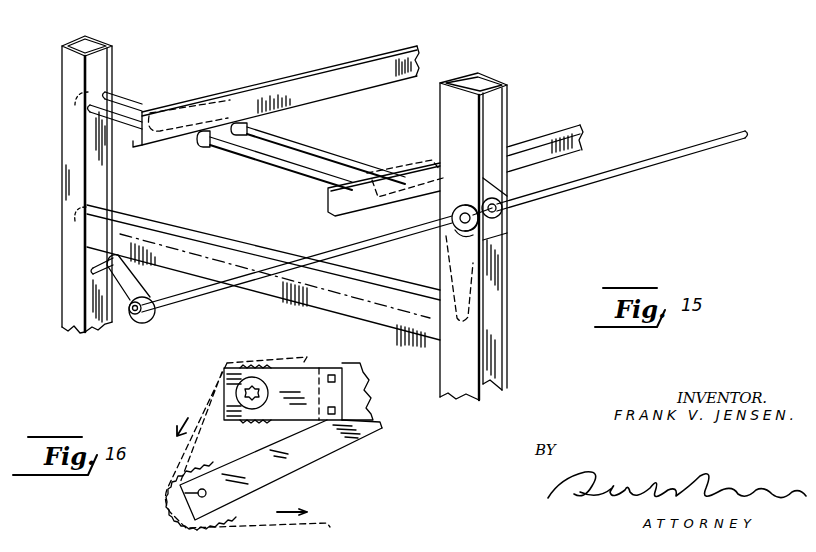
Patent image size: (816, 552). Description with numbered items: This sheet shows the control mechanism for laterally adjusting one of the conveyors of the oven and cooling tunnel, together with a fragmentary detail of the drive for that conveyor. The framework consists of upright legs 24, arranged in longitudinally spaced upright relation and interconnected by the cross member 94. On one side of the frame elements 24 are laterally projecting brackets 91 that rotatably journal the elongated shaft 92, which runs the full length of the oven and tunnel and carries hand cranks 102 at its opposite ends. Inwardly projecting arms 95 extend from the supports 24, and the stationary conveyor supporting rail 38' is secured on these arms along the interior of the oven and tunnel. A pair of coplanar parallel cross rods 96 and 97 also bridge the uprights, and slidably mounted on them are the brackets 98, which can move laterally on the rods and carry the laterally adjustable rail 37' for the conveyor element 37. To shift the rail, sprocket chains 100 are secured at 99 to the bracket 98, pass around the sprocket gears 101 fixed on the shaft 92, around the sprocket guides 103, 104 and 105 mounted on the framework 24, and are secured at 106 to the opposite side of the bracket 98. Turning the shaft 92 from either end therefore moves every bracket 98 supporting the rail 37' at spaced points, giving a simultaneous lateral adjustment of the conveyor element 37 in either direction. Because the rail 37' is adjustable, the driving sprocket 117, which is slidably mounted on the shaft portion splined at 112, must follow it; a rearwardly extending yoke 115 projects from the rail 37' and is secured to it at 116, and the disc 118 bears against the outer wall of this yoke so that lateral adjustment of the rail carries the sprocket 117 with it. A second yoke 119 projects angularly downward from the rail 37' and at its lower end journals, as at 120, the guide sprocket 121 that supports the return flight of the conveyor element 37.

In FIG. 15, the upright legs 24 is at (70, 280).
In FIG. 15, the laterally adjustable rail 37' is at (263, 218).
In FIG. 16, the laterally adjustable rail 37' is at (379, 385).
In FIG. 15, the stationary conveyor supporting rail 38' is at (545, 124).
In FIG. 15, the laterally projecting brackets 91 is at (509, 223).
In FIG. 15, the elongated shaft 92 is at (630, 167).
In FIG. 15, the cross member 94 is at (284, 304).
In FIG. 15, the inwardly projecting arms 95 is at (413, 208).
In FIG. 15, the cross rod 96 is at (267, 162).
In FIG. 15, the cross rod 97 is at (342, 122).
In FIG. 15, the brackets 98 is at (192, 140).
In FIG. 15, the chain securement point 99 is at (230, 122).
In FIG. 15, the sprocket chains 100 is at (353, 167).
In FIG. 15, the sprocket gears 101 is at (457, 233).
In FIG. 15, the hand cranks 102 is at (110, 270).
In FIG. 15, the sprocket guide 103 is at (443, 277).
In FIG. 15, the sprocket guide 104 is at (72, 213).
In FIG. 15, the sprocket guide 105 is at (62, 105).
In FIG. 15, the chain end securement point 106 is at (172, 112).
In FIG. 16, the spline 112 is at (270, 384).
In FIG. 16, the yoke 115 is at (300, 420).
In FIG. 16, the yoke securement point 116 is at (333, 375).
In FIG. 16, the sprocket 117 is at (253, 358).
In FIG. 16, the disc 118 is at (227, 377).
In FIG. 16, the second yoke 119 is at (268, 468).
In FIG. 16, the journal 120 is at (172, 487).
In FIG. 16, the guide sprocket 121 is at (210, 463).
In FIG. 16, the conveyor element 37 is at (232, 458).